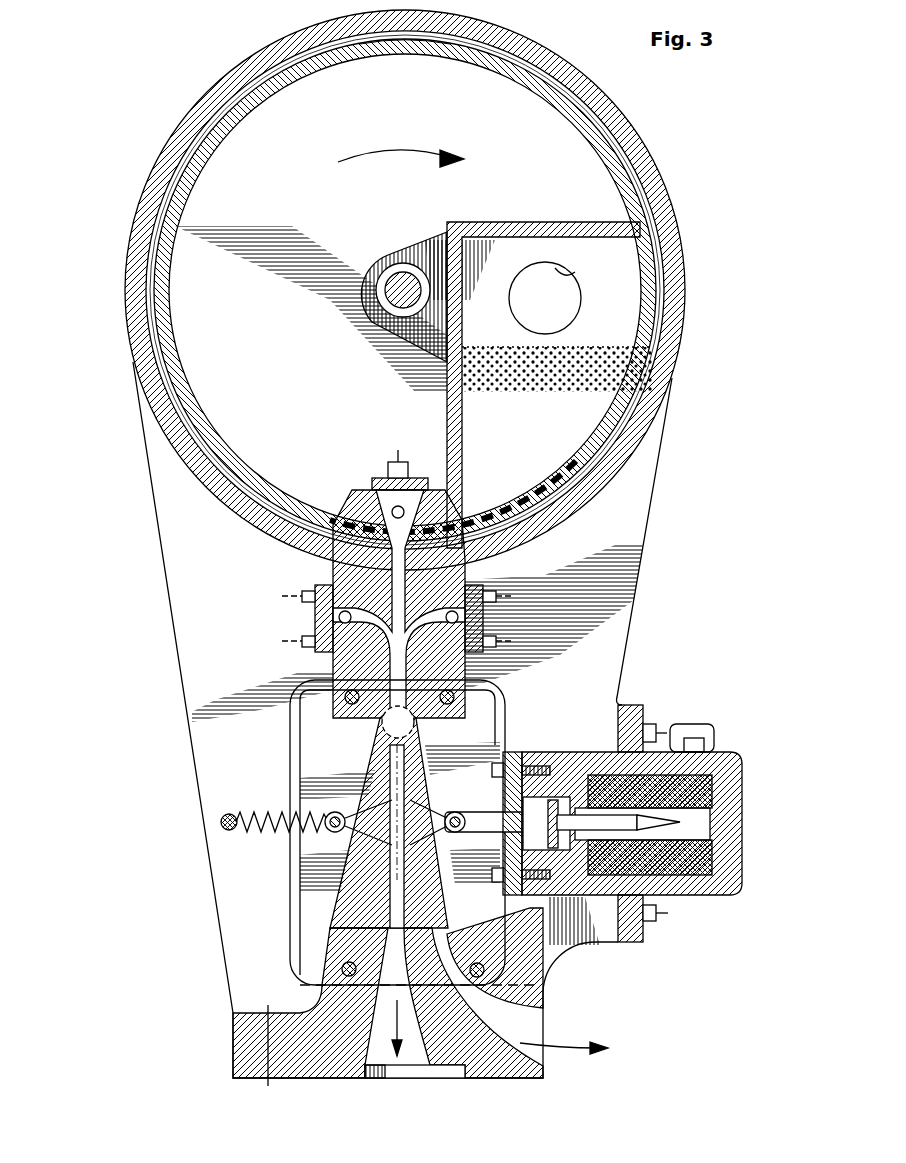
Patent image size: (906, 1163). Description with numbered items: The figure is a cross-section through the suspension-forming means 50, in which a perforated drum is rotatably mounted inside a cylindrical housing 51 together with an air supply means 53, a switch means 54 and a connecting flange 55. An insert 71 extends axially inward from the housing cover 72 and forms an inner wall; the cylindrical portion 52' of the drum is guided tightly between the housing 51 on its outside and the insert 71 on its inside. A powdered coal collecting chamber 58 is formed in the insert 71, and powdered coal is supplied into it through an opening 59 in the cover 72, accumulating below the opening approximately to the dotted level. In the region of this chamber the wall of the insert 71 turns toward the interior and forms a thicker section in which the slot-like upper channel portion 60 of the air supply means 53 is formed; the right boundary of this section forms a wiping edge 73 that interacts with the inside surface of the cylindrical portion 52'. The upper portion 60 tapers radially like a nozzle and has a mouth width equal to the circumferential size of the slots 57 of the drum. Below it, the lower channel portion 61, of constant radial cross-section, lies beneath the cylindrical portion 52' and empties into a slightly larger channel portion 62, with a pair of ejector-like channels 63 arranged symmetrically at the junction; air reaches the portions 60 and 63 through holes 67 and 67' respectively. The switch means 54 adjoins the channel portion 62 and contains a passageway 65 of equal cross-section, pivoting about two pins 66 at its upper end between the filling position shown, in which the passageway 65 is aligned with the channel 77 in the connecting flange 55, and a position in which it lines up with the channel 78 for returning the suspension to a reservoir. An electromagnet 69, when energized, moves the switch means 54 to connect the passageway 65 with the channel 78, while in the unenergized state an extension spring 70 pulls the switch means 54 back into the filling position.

The suspension-forming means 50 is at (668, 160).
The cylindrical housing 51 is at (668, 238).
The cylindrical portion 52' is at (448, 290).
The air supply means 53 is at (487, 575).
The switch means 54 is at (355, 900).
The connecting flange 55 is at (248, 1047).
The slots 57 is at (578, 490).
The powdered coal collecting chamber 58 is at (557, 342).
The opening 59 is at (573, 273).
The upper channel portion 60 is at (398, 531).
The lower channel portion 61 is at (400, 583).
The channel portion 62 is at (395, 655).
The ejector-like channels 63 is at (364, 622).
The passageway 65 is at (405, 812).
The pins 66 is at (385, 735).
The holes 67 is at (409, 482).
The holes 67' is at (406, 618).
The electromagnet 69 is at (676, 905).
The extension spring 70 is at (272, 812).
The insert 71 is at (472, 55).
The housing cover 72 is at (215, 135).
The wiping edge 73 is at (462, 545).
The channel 77 is at (380, 1040).
The channel 78 is at (520, 1026).